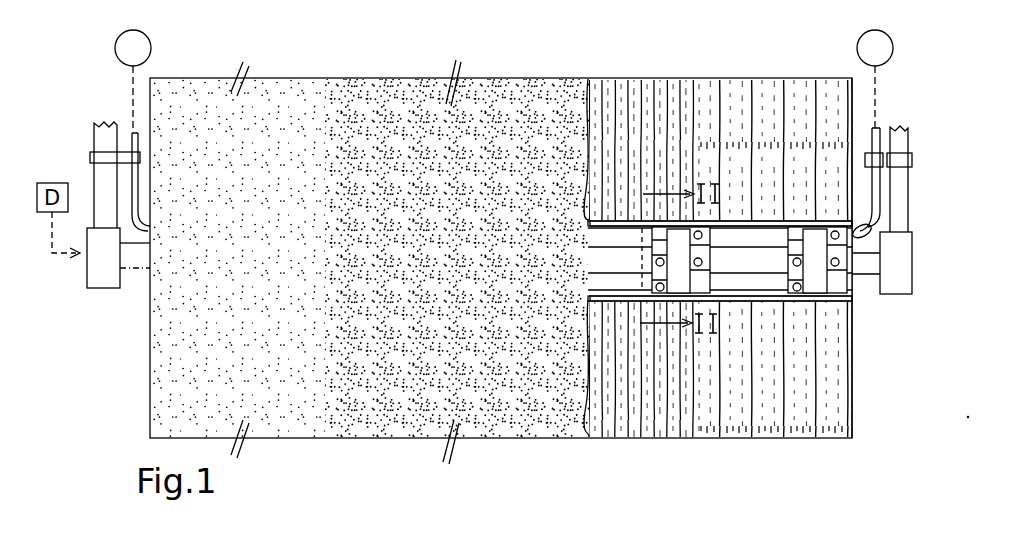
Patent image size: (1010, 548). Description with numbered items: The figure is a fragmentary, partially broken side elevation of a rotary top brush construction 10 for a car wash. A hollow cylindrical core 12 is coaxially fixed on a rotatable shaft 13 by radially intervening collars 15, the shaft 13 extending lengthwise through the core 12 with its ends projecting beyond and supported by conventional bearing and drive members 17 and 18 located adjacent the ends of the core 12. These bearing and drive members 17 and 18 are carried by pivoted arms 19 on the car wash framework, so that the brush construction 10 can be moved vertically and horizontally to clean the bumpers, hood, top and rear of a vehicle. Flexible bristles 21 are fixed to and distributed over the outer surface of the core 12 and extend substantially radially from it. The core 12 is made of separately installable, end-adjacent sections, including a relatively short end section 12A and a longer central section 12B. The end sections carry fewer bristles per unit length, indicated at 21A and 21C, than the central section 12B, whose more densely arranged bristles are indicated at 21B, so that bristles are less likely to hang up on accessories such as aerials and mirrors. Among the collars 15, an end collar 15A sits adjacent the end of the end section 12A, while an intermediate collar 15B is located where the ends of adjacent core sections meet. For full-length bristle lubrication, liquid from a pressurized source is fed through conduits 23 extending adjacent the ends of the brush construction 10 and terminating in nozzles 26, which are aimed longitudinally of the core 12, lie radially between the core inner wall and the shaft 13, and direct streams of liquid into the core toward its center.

The brush construction 10 is at (337, 63).
The bristles 21C is at (173, 78).
The flexible bristles 21 is at (710, 232).
The bristles 21A is at (770, 84).
The bristles 21B is at (614, 83).
The hollow cylindrical core 12 is at (860, 300).
The core end section 12A is at (823, 302).
The central core section 12B is at (615, 220).
The collars 15 is at (752, 359).
The end collar 15A is at (793, 287).
The intermediate collar 15B is at (710, 280).
The rotatable shaft 13 is at (871, 260).
The bearing and drive member 18 is at (926, 272).
The bearing and drive member 17 is at (97, 290).
The pivoted arms 19 is at (100, 180).
The conduits 23 is at (132, 138).
The nozzles 26 is at (853, 233).